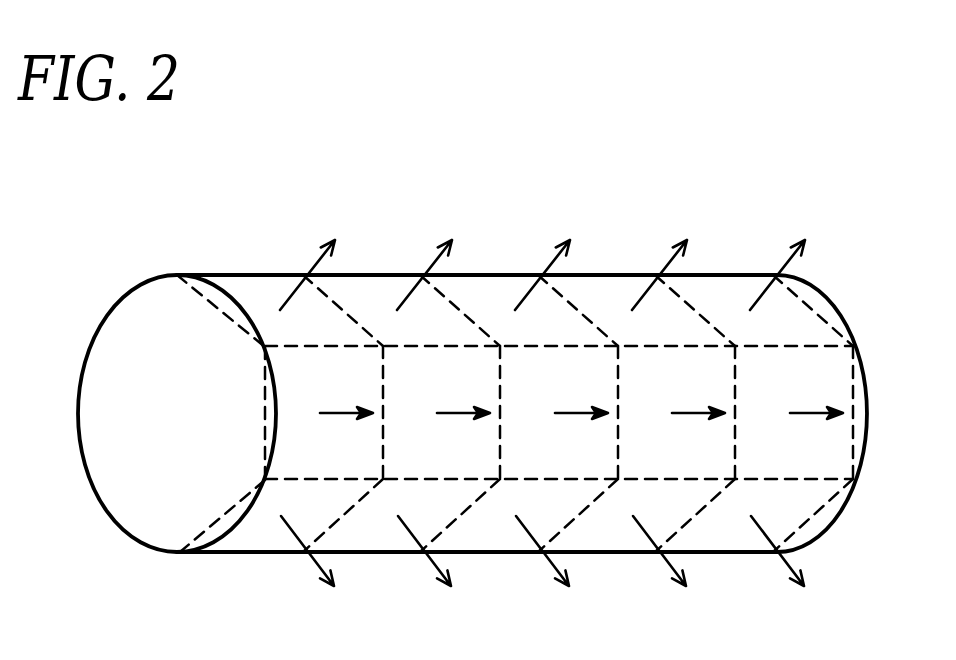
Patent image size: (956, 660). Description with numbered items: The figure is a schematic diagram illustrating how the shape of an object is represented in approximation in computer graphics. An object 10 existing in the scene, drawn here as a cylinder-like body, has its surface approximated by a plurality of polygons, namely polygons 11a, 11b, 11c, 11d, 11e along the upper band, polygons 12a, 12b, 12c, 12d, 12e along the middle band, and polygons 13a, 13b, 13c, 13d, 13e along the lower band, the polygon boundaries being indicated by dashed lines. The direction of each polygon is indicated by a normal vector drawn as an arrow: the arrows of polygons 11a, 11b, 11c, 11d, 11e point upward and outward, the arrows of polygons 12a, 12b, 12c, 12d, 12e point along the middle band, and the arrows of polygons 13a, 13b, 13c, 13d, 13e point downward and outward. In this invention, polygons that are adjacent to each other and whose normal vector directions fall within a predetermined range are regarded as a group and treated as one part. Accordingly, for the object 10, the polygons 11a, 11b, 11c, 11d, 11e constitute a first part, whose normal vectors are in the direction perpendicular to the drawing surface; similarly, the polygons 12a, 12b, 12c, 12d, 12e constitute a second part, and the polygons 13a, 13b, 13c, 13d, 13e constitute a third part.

The object 10 is at (118, 523).
The polygon 11a is at (331, 294).
The polygon 11b is at (448, 294).
The polygon 11c is at (566, 294).
The polygon 11d is at (683, 294).
The polygon 11e is at (801, 294).
The polygon 12a is at (334, 441).
The polygon 12b is at (451, 441).
The polygon 12c is at (569, 441).
The polygon 12d is at (686, 441).
The polygon 12e is at (804, 441).
The polygon 13a is at (332, 532).
The polygon 13b is at (427, 532).
The polygon 13c is at (545, 532).
The polygon 13d is at (662, 532).
The polygon 13e is at (780, 532).